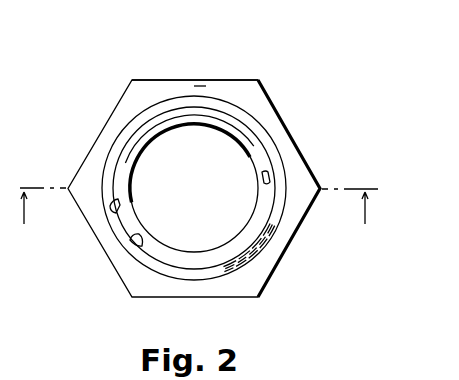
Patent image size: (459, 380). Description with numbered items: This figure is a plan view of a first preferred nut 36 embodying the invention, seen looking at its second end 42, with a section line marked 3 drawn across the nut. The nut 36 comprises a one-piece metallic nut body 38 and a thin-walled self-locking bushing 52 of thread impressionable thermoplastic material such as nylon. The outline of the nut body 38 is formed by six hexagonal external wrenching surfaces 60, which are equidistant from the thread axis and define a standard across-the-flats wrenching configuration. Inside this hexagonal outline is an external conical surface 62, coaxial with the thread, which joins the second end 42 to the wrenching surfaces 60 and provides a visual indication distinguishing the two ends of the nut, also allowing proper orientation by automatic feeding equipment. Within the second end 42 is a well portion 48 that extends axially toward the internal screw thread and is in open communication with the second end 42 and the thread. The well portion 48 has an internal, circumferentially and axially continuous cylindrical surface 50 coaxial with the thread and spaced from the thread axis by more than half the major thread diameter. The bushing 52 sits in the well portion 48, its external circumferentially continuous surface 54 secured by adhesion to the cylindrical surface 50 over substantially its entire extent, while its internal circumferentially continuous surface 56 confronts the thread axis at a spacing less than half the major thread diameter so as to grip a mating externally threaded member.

The nut 36 is at (304, 117).
The nut body 38 is at (237, 86).
The second end 42 is at (133, 126).
The well portion 48 is at (139, 236).
The cylindrical surface 50 is at (268, 172).
The self-locking bushing 52 is at (214, 251).
The external surface 54 is at (120, 205).
The internal surface 56 is at (250, 157).
The wrenching surfaces 60 is at (170, 80).
The conical surface 62 is at (200, 86).
The section line 3- 3 is at (197, 222).